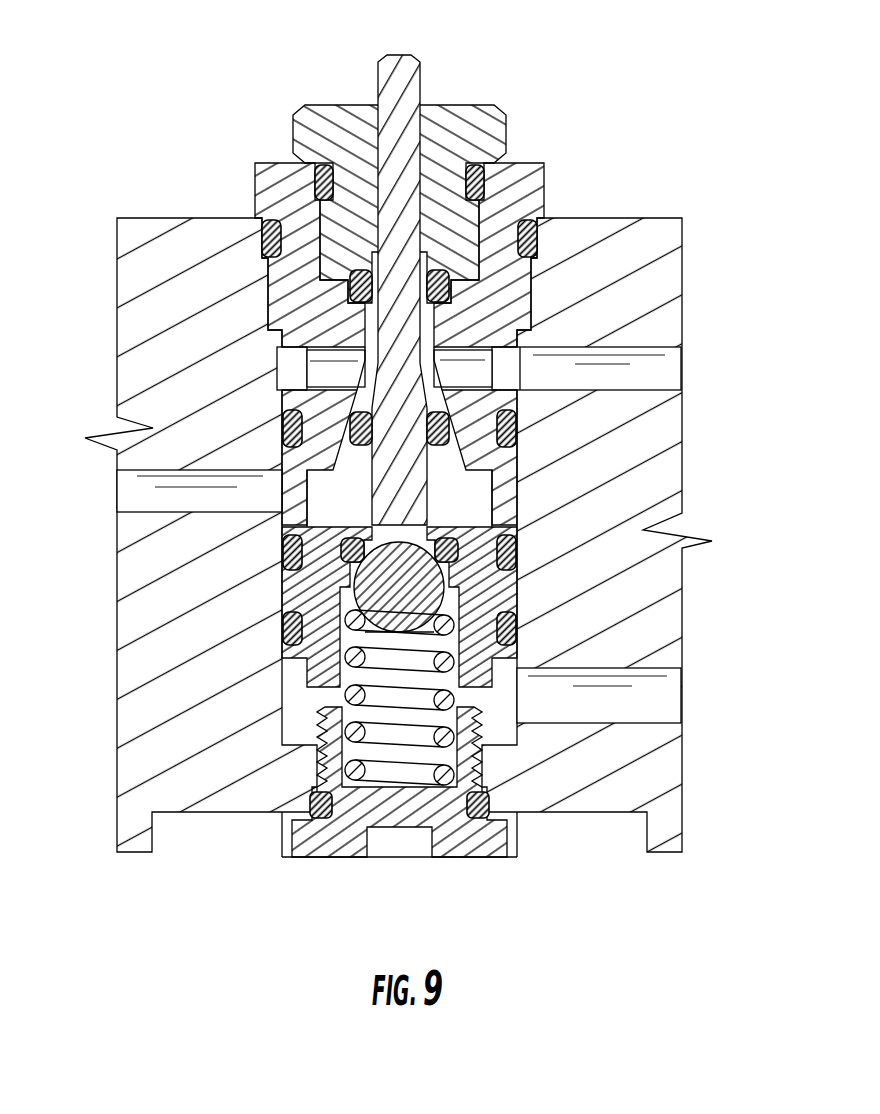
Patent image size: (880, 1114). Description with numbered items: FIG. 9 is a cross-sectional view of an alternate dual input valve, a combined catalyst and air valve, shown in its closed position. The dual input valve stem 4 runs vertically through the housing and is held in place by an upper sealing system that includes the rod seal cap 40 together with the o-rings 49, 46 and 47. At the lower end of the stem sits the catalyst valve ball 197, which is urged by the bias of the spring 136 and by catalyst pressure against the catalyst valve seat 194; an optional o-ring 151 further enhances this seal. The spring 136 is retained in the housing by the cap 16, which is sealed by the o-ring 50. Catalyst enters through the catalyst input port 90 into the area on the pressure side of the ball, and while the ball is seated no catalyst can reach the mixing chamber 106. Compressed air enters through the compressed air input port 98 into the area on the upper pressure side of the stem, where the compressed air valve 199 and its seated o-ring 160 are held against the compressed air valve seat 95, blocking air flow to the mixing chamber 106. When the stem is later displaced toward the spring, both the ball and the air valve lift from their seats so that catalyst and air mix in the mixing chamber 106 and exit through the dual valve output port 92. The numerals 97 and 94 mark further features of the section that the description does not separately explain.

The dual input valve stem 4 is at (559, 274).
The rod seal cap 40 is at (499, 128).
The o-ring 49 is at (318, 183).
The o-ring 46 is at (262, 232).
The compressed air valve 199 is at (543, 297).
The seated o-ring 160 is at (405, 390).
The compressed air valve seat 95 is at (352, 408).
The compressed air input port 98 is at (667, 372).
The o-ring 47 is at (283, 433).
The mixing chamber 106 is at (447, 488).
The dual valve output port 92 is at (120, 490).
The piston lower portion 97 is at (400, 507).
The o-ring 151 is at (345, 550).
The catalyst valve seat 194 is at (283, 640).
The catalyst input port 90 is at (680, 700).
The cage 94 is at (340, 600).
The spring 136 is at (440, 773).
The catalyst valve ball 197 is at (363, 596).
The o-ring 50 is at (318, 822).
The cap 16 is at (463, 838).